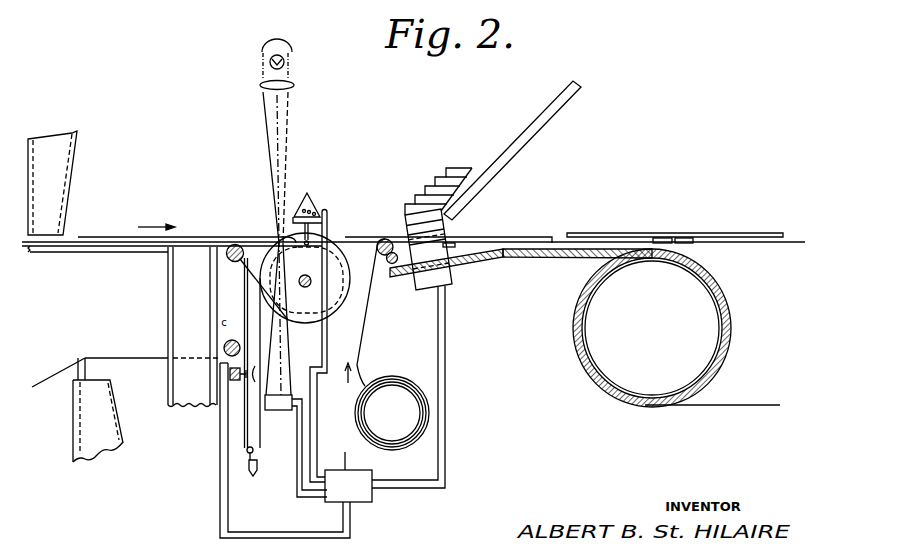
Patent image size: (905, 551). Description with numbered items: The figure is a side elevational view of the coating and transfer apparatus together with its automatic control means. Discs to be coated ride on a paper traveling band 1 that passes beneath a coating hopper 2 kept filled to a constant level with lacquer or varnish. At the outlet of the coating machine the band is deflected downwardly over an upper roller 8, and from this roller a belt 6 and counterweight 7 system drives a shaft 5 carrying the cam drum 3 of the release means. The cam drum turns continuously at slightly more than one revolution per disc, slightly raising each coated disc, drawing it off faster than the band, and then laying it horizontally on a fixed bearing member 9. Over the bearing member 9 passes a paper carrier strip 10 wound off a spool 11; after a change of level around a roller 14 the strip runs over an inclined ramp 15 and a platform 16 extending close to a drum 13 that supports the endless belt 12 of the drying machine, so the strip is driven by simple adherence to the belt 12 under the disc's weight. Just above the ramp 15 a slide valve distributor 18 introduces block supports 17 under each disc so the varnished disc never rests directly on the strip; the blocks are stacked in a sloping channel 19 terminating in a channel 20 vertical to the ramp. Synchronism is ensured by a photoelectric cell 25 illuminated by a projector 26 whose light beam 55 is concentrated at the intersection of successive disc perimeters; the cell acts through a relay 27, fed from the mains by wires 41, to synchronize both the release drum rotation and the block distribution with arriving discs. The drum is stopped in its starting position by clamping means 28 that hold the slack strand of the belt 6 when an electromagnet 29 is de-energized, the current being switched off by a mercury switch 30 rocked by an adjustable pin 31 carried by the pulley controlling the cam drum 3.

The traveling band 1 is at (67, 243).
The coating hopper 2 is at (77, 135).
The cam drum 3 is at (338, 310).
The shaft 5 is at (306, 274).
The belt 6 is at (248, 446).
The counterweight 7 is at (250, 476).
The upper roller 8 is at (236, 262).
The bearing member 9 is at (376, 247).
The carrier strip 10 is at (362, 338).
The spool 11 is at (393, 376).
The endless belt 12 is at (782, 247).
The drum 13 is at (723, 345).
The roller 14 is at (392, 265).
The inclined ramp 15 is at (486, 263).
The platform 16 is at (556, 257).
The block supports 17 is at (450, 245).
The slide valve distributor 18 is at (447, 283).
The sloping channel 19 is at (527, 137).
The vertical channel 20 is at (403, 212).
The photoelectric cell 25 is at (279, 411).
The projector 26 is at (292, 50).
The relay 27 is at (333, 494).
The clamping means 28 is at (245, 362).
The electromagnet 29 is at (229, 373).
The mercury switch 30 is at (293, 202).
The pin 31 is at (302, 238).
The wires 41 is at (345, 452).
The light beam 55 is at (285, 135).